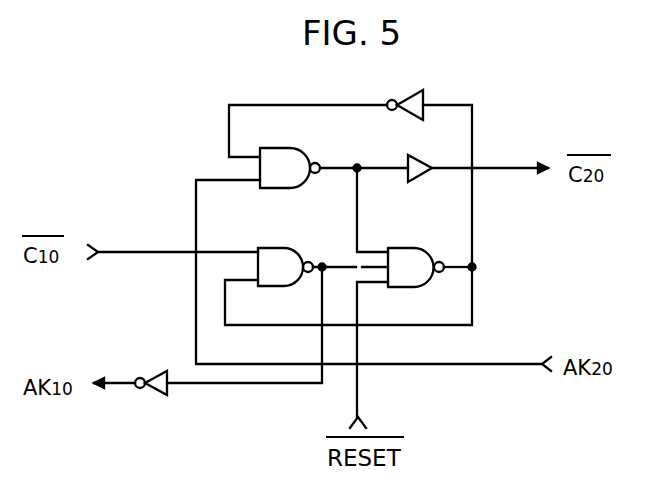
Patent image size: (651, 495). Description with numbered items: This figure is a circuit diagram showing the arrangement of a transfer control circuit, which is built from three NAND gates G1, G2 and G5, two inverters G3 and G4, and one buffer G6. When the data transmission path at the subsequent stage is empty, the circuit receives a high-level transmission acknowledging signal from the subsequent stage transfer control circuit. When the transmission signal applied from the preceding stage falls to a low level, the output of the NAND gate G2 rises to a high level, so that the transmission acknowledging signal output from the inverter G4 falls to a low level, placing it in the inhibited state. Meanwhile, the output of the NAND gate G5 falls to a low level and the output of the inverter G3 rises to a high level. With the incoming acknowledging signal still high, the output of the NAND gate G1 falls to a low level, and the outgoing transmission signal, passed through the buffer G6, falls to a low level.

The NAND gate G1 is at (283, 150).
The NAND gate G2 is at (293, 248).
The inverter G3 is at (408, 119).
The inverter G4 is at (160, 372).
The NAND gate G5 is at (417, 258).
The buffer G6 is at (426, 163).